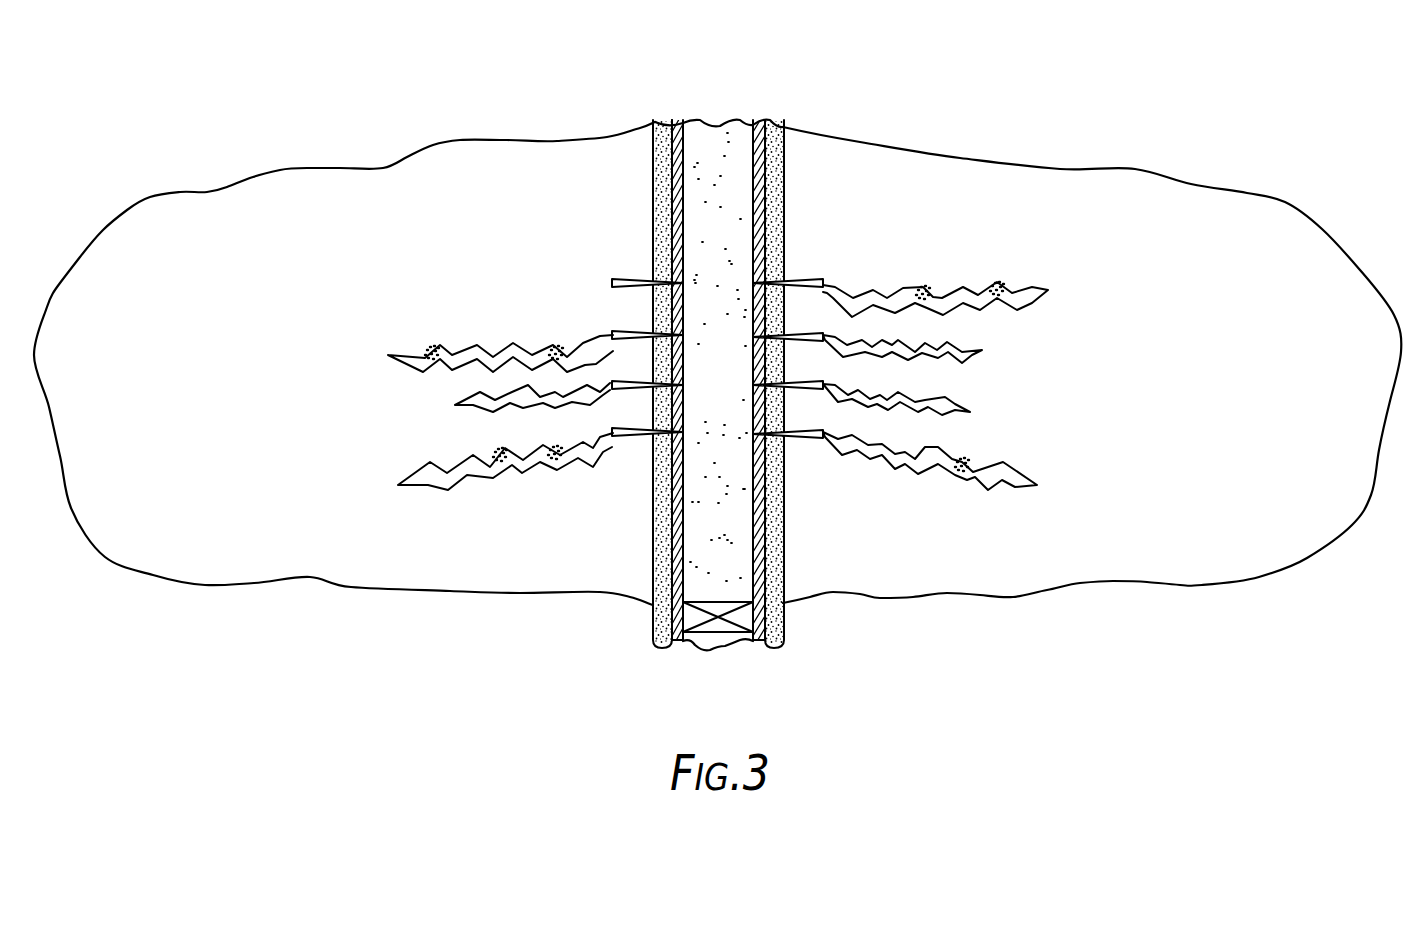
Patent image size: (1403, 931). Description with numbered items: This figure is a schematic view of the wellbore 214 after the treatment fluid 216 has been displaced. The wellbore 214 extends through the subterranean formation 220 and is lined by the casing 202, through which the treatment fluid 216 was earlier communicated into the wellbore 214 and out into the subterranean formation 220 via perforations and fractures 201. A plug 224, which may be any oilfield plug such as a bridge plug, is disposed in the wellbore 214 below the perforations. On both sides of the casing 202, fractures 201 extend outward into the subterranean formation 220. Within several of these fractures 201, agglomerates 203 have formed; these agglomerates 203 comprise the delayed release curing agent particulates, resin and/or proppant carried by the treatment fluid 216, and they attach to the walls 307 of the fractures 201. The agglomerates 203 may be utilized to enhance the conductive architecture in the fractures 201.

The fractures 201 is at (588, 343).
The casing 202 is at (652, 152).
The agglomerates 203 is at (553, 342).
The wellbore 214 is at (704, 346).
The treatment fluid 216 is at (741, 120).
The subterranean formation 220 is at (188, 279).
The plug 224 is at (712, 637).
The walls 307 is at (403, 350).